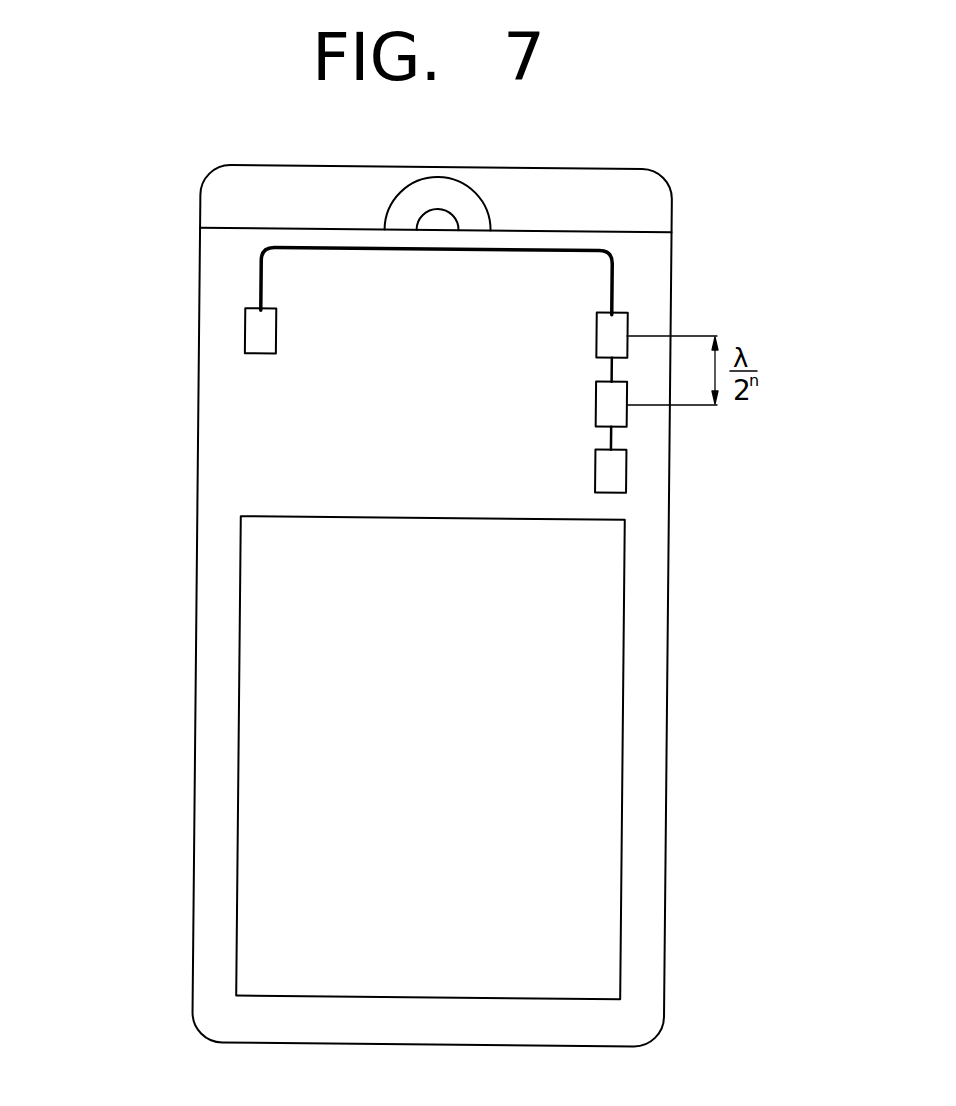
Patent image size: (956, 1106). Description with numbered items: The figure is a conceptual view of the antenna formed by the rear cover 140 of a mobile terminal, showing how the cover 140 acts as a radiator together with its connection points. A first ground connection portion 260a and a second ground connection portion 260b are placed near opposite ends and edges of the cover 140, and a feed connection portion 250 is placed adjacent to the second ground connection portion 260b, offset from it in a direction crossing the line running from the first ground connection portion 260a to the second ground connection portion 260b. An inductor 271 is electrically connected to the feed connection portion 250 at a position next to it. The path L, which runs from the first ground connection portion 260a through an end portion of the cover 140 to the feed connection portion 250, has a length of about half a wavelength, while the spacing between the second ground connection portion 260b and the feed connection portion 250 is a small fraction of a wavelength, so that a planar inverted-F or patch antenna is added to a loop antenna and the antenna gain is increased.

The cover 140 is at (183, 449).
The path L is at (615, 284).
The first ground connection portion 260a is at (250, 337).
The second ground connection portion 260b is at (622, 323).
The feed connection portion 250 is at (620, 417).
The inductor 271 is at (620, 475).